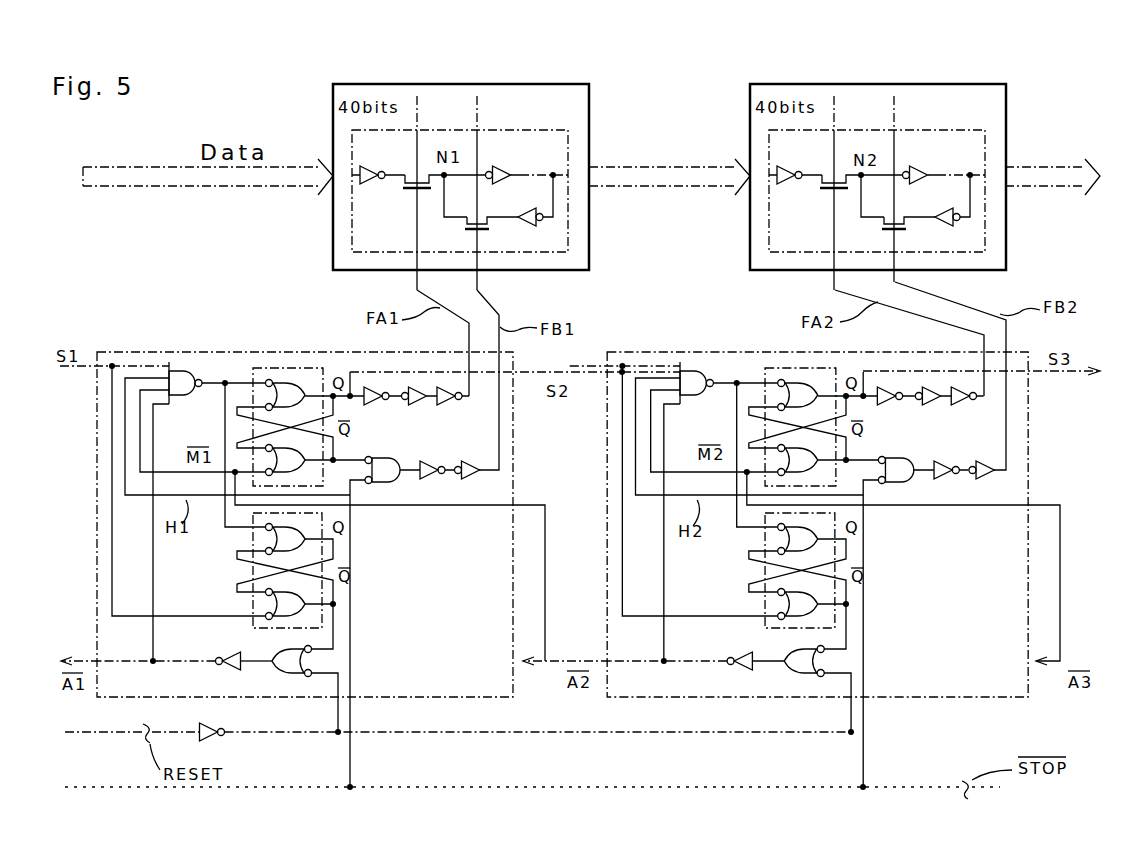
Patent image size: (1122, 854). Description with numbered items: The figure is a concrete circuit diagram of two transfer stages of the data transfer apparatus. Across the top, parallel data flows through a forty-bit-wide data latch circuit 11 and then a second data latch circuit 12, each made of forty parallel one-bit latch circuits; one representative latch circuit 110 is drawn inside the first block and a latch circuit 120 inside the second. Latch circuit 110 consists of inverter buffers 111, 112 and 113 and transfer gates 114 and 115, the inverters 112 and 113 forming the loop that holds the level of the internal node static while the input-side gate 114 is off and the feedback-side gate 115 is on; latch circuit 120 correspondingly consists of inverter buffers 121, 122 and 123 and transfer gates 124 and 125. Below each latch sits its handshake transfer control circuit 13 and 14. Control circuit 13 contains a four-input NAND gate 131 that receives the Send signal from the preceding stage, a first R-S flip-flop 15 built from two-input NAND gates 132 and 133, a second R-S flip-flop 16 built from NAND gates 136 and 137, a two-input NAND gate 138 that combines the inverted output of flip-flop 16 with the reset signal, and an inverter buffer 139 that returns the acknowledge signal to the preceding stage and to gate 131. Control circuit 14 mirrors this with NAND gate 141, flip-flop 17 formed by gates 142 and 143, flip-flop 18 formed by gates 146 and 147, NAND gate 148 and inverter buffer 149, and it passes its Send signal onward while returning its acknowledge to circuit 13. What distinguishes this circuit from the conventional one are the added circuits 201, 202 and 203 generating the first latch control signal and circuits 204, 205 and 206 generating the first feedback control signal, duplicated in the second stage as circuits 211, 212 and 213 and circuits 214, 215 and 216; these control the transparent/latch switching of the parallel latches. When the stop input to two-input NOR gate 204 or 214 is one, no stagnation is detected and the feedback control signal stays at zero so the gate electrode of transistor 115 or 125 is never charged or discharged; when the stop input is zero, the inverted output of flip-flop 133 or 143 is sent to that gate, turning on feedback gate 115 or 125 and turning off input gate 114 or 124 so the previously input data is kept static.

The data latch circuit 11 is at (590, 99).
The data latch circuit 12 is at (907, 167).
The handshake transfer control circuit 13 is at (532, 698).
The handshake transfer control circuit 14 is at (858, 537).
The first R-S flip-flop 15 is at (255, 362).
The second R-S flip-flop 16 is at (330, 625).
The first R-S flip-flop 17 is at (771, 393).
The second R-S flip-flop 18 is at (847, 574).
The latch circuit 110 is at (490, 130).
The inverter buffer 111 is at (367, 184).
The inverter buffer 112 is at (502, 166).
The inverter buffer 113 is at (540, 226).
The transfer gate 114 is at (424, 190).
The transfer gate 115 is at (490, 232).
The latch circuit 120 is at (877, 170).
The inverter buffer 121 is at (800, 198).
The inverter buffer 122 is at (934, 159).
The inverter buffer 123 is at (1000, 235).
The transfer gate 124 is at (852, 210).
The transfer gate 125 is at (943, 213).
The 4-input NAND gate 131 is at (188, 398).
The 2-input NAND gate 132 is at (290, 380).
The 2-input NAND gate 133 is at (298, 468).
The 2-input NAND gate 136 is at (252, 538).
The 2-input NAND gate 137 is at (262, 604).
The 2-input NAND gate 138 is at (320, 661).
The inverter buffer 139 is at (218, 656).
The 4-input NAND gate 141 is at (696, 399).
The 2-input NAND gate 142 is at (788, 353).
The 2-input NAND gate 143 is at (848, 512).
The 2-input NAND gate 146 is at (751, 542).
The 2-input NAND gate 147 is at (757, 604).
The 2-input NAND gate 148 is at (857, 661).
The inverter buffer 149 is at (719, 651).
The circuit for generating signal FA1 201 is at (376, 404).
The circuit for generating signal FA1 202 is at (416, 404).
The circuit for generating signal FA1 203 is at (448, 404).
The 2-input NOR gate 204 is at (390, 484).
The circuit for generating signal FB1 205 is at (432, 481).
The circuit for generating signal FB1 206 is at (488, 476).
The circuit for generating signal FA2 211 is at (895, 416).
The circuit for generating signal FA2 212 is at (933, 411).
The circuit for generating signal FA2 213 is at (971, 415).
The 2-input NOR gate 214 is at (912, 504).
The circuit for generating signal FB2 215 is at (965, 505).
The circuit for generating signal FB2 216 is at (1041, 477).